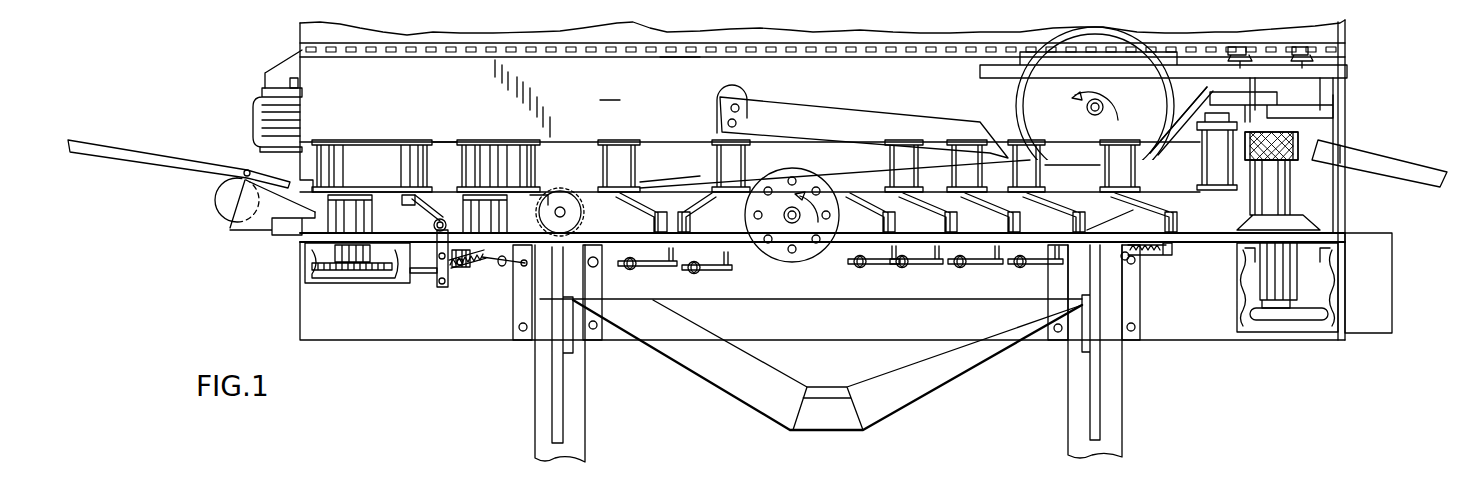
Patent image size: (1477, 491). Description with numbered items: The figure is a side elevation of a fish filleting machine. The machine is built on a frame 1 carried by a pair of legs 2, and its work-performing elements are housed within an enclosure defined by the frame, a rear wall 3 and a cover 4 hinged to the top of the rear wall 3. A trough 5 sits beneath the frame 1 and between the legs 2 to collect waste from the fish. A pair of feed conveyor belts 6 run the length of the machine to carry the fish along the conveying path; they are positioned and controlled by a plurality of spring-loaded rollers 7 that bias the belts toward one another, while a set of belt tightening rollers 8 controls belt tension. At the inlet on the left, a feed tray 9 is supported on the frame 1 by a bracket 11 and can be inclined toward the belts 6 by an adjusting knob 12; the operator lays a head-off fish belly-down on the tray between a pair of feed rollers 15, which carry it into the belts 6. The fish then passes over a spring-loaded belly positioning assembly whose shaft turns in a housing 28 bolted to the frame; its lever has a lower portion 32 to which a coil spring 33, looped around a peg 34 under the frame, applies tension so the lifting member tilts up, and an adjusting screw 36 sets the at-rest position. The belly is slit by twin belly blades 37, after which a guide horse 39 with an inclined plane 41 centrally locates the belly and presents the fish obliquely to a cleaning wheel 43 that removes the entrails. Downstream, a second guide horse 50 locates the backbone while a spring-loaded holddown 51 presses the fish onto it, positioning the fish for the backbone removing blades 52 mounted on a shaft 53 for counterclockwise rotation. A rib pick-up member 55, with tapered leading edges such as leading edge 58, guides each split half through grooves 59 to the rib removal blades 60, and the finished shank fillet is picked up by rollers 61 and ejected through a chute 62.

The frame 1 is at (740, 247).
The legs 2 is at (535, 424).
The rear wall 3 is at (652, 92).
The cover 4 is at (673, 33).
The trough 5 is at (897, 410).
The feed conveyor belts 6 is at (443, 140).
The spring-loaded rollers 7 is at (617, 140).
The belt tightening rollers 8 is at (477, 140).
The feed tray 9 is at (140, 165).
The bracket 11 is at (258, 240).
The adjusting knob 12 is at (213, 207).
The feed rollers 15 is at (342, 160).
The housing 28 is at (433, 188).
The lower portion of lever 32 is at (437, 283).
The coil spring 33 is at (490, 270).
The peg 34 is at (495, 268).
The adjusting screw 36 is at (461, 268).
The belly blades 37 is at (575, 190).
The guide horse 39 is at (694, 206).
The inclined plane 41 is at (660, 187).
The cleaning wheel 43 is at (810, 258).
The second guide horse 50 is at (1089, 194).
The spring-loaded holddown 51 is at (812, 115).
The backbone removing blades 52 is at (1047, 113).
The shaft 53 is at (1090, 114).
The rib pick-up member 55 is at (1200, 95).
The leading edge 58 is at (1212, 243).
The grooves 59 is at (1213, 232).
The rib removal blades 60 is at (1266, 157).
The rollers 61 is at (1297, 140).
The chute 62 is at (1400, 154).